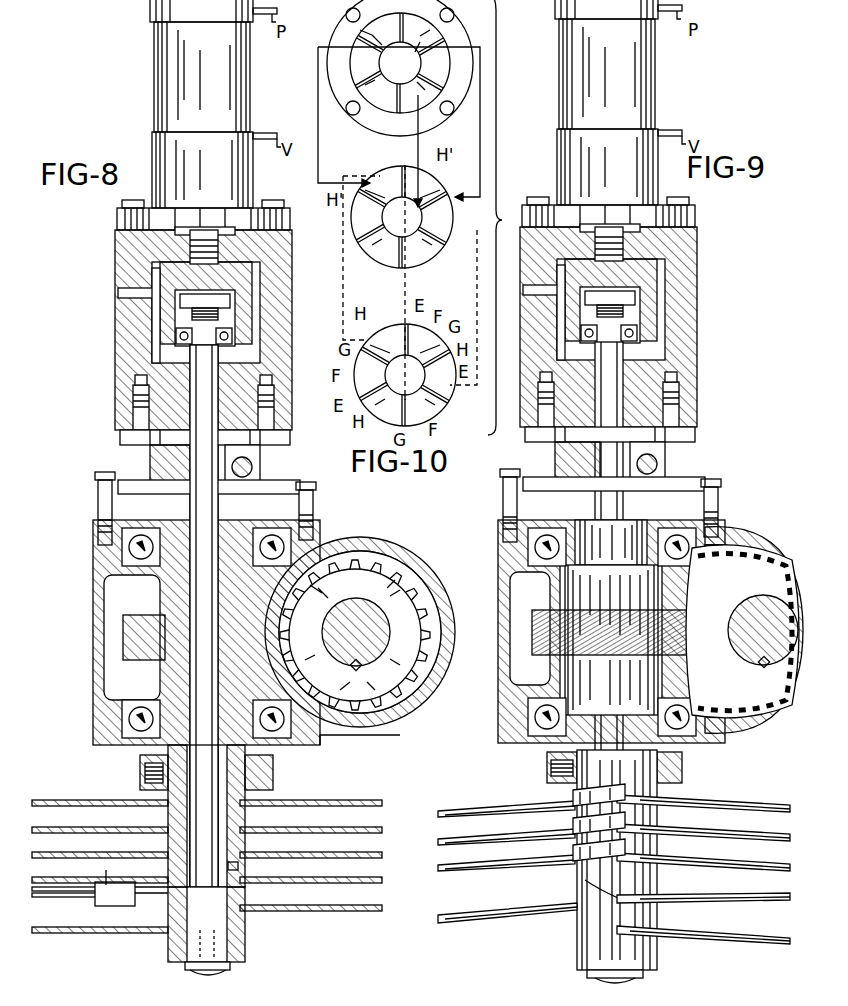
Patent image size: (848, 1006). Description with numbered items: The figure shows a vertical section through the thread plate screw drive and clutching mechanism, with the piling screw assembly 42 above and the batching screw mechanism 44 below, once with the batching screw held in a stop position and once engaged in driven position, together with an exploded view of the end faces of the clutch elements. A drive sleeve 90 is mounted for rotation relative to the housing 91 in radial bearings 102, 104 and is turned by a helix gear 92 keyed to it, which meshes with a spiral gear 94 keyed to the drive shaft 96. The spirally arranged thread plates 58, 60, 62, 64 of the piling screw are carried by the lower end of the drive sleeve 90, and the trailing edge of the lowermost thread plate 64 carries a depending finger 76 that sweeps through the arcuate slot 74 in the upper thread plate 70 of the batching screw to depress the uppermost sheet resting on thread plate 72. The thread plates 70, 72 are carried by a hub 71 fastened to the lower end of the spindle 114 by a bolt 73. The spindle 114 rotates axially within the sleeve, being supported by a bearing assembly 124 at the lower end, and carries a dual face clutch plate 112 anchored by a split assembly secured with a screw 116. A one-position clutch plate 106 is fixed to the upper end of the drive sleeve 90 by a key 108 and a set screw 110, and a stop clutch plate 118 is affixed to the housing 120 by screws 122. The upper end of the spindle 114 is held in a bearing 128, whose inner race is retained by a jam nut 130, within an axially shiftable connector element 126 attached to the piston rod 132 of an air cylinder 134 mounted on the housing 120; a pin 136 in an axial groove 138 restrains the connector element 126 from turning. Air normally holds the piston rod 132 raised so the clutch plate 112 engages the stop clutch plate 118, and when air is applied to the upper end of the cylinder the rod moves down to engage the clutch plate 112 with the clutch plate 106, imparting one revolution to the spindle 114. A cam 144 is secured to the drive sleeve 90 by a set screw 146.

In FIG. 8, the piling screw assembly 42 is at (204, 826).
In FIG. 9, the piling screw assembly 42 is at (597, 818).
In FIG. 8, the batching screw mechanism 44 is at (207, 931).
In FIG. 9, the batching screw mechanism 44 is at (614, 875).
In FIG. 8, the thread plate 58 is at (50, 802).
In FIG. 9, the thread plate 58 is at (742, 804).
In FIG. 8, the thread plate 60 is at (50, 830).
In FIG. 9, the thread plate 60 is at (440, 812).
In FIG. 8, the thread plate 62 is at (50, 855).
In FIG. 9, the thread plate 62 is at (440, 838).
In FIG. 8, the thread plate 64 is at (50, 880).
In FIG. 9, the thread plate 64 is at (440, 864).
In FIG. 8, the thread plate 70 is at (64, 896).
In FIG. 9, the thread plate 70 is at (620, 905).
In FIG. 8, the hub 71 is at (245, 946).
In FIG. 9, the hub 71 is at (586, 945).
In FIG. 8, the thread plate 72 is at (92, 933).
In FIG. 9, the thread plate 72 is at (695, 941).
In FIG. 8, the bolt 73 is at (205, 976).
In FIG. 9, the bolt 73 is at (600, 980).
In FIG. 8, the arcuate slot 74 is at (132, 898).
In FIG. 8, the finger 76 is at (107, 884).
In FIG. 9, the finger 76 is at (600, 900).
In FIG. 8, the drive sleeve 90 is at (165, 680).
In FIG. 9, the drive sleeve 90 is at (572, 677).
In FIG. 8, the housing 91 is at (108, 624).
In FIG. 9, the housing 91 is at (512, 590).
In FIG. 8, the helix gear 92 is at (123, 650).
In FIG. 9, the helix gear 92 is at (548, 614).
In FIG. 8, the spiral gear 94 is at (396, 686).
In FIG. 9, the spiral gear 94 is at (736, 662).
In FIG. 8, the drive shaft 96 is at (385, 636).
In FIG. 9, the drive shaft 96 is at (768, 598).
In FIG. 8, the radial bearing 102 is at (141, 556).
In FIG. 9, the radial bearing 102 is at (547, 560).
In FIG. 8, the radial bearing 104 is at (141, 726).
In FIG. 9, the radial bearing 104 is at (545, 728).
In FIG. 8, the one-position clutch plate 106 is at (120, 487).
In FIG. 9, the one-position clutch plate 106 is at (593, 469).
In FIG. 10, the one-position clutch plate 106 is at (440, 400).
In FIG. 8, the key 108 is at (100, 522).
In FIG. 9, the key 108 is at (501, 505).
In FIG. 8, the set screw 110 is at (311, 510).
In FIG. 8, the dual face clutch plate 112 is at (152, 465).
In FIG. 9, the dual face clutch plate 112 is at (649, 453).
In FIG. 10, the dual face clutch plate 112 is at (442, 192).
In FIG. 8, the spindle 114 is at (192, 380).
In FIG. 9, the spindle 114 is at (669, 614).
In FIG. 8, the screw 116 is at (258, 468).
In FIG. 9, the screw 116 is at (686, 464).
In FIG. 8, the stop clutch plate 118 is at (138, 428).
In FIG. 9, the stop clutch plate 118 is at (634, 419).
In FIG. 10, the stop clutch plate 118 is at (333, 26).
In FIG. 8, the housing 120 is at (130, 351).
In FIG. 9, the housing 120 is at (633, 312).
In FIG. 8, the screws 122 is at (133, 395).
In FIG. 9, the screws 122 is at (650, 399).
In FIG. 8, the bearing assembly 124 is at (240, 867).
In FIG. 8, the connector element 126 is at (165, 278).
In FIG. 9, the connector element 126 is at (647, 301).
In FIG. 8, the bearing 128 is at (176, 338).
In FIG. 9, the bearing 128 is at (559, 350).
In FIG. 8, the jam nut 130 is at (232, 304).
In FIG. 9, the jam nut 130 is at (664, 309).
In FIG. 8, the piston rod 132 is at (190, 246).
In FIG. 9, the piston rod 132 is at (620, 242).
In FIG. 8, the air cylinder 134 is at (153, 106).
In FIG. 9, the air cylinder 134 is at (627, 102).
In FIG. 8, the pin 136 is at (118, 293).
In FIG. 9, the pin 136 is at (521, 295).
In FIG. 8, the groove 138 is at (152, 300).
In FIG. 9, the groove 138 is at (523, 312).
In FIG. 8, the cam 144 is at (140, 776).
In FIG. 9, the cam 144 is at (682, 766).
In FIG. 8, the set screw 146 is at (145, 770).
In FIG. 9, the set screw 146 is at (547, 768).